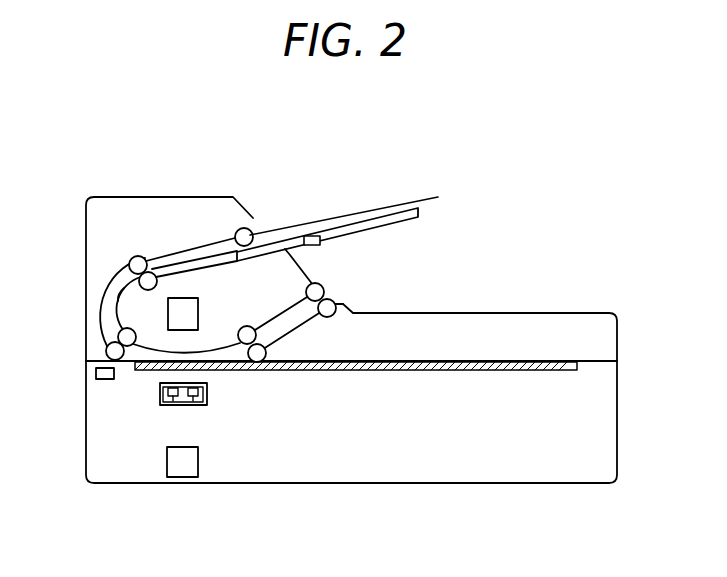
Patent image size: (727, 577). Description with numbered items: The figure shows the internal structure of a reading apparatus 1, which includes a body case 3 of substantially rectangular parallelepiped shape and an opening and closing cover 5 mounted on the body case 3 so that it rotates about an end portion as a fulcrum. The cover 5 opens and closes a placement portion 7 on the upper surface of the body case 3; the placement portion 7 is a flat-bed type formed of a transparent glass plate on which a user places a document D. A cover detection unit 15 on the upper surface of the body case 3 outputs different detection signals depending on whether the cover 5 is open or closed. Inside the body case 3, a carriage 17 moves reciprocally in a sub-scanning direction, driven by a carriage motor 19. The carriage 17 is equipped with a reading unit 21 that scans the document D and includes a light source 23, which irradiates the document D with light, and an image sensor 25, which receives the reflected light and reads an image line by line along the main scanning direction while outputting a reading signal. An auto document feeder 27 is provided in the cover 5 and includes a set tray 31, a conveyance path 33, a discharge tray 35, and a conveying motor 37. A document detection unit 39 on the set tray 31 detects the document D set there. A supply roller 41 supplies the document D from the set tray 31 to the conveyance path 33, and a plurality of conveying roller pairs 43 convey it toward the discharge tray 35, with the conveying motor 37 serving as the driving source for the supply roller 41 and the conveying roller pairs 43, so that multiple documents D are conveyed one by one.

The reading apparatus 1 is at (272, 101).
The body case 3 is at (617, 437).
The opening and closing cover 5 is at (617, 337).
The placement portion 7 is at (447, 371).
The cover detection unit 15 is at (96, 373).
The carriage 17 is at (158, 390).
The carriage motor 19 is at (183, 477).
The reading unit 21 is at (163, 388).
The light source 23 is at (165, 397).
The image sensor 25 is at (187, 403).
The auto document feeder (ADF) 27 is at (148, 210).
The set tray 31 is at (399, 221).
The conveyance path 33 is at (108, 323).
The discharge tray 35 is at (478, 313).
The conveying motor 37 is at (184, 298).
The document detection unit 39 is at (314, 234).
The supply roller 41 is at (242, 228).
The conveying roller pairs 43 is at (133, 258).
The document D is at (436, 197).